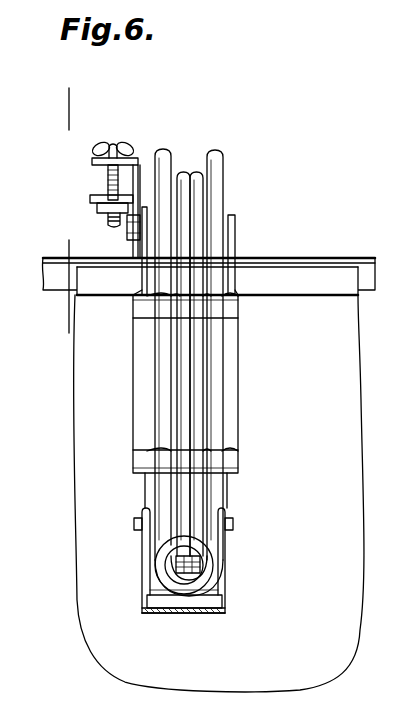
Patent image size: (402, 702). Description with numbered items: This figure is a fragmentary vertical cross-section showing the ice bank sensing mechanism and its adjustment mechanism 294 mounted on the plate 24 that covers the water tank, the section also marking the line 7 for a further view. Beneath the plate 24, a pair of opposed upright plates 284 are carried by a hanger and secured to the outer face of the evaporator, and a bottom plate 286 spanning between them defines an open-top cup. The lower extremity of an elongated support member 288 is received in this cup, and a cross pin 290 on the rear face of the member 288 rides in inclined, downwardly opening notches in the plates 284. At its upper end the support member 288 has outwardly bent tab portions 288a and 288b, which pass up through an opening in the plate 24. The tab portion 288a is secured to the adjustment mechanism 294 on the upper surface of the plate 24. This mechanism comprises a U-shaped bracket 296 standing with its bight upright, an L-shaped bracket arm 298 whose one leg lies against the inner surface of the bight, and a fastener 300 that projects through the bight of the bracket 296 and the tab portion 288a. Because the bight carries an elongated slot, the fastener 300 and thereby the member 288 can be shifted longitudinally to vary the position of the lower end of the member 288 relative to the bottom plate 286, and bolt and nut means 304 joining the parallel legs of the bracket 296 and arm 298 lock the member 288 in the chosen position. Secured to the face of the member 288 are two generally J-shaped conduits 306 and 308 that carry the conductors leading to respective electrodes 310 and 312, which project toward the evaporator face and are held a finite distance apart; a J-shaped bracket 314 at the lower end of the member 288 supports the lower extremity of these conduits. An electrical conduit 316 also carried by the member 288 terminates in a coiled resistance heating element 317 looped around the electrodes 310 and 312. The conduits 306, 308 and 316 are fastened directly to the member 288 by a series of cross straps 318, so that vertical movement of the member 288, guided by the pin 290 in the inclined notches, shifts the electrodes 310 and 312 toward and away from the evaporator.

The section line 7- 7 is at (64, 109).
The plate 24 is at (316, 258).
The upright plates 284 is at (142, 530).
The bottom plate 286 is at (163, 611).
The support member 288 is at (238, 418).
The outwardly bent tab portion 288a is at (147, 277).
The outwardly bent tab portion 288b is at (236, 226).
The cross pin 290 is at (230, 523).
The adjustment mechanism 294 is at (90, 157).
The U-shaped bracket 296 is at (142, 160).
The L-shaped bracket arm 298 is at (90, 200).
The fastener 300 is at (127, 236).
The bolt and nut means 304 is at (114, 144).
The conduit 306 is at (176, 378).
The conduit 308 is at (196, 376).
The electrode 310 is at (163, 577).
The electrode 312 is at (198, 563).
The J-shaped bracket 314 is at (220, 592).
The electrical conduit 316 is at (223, 180).
The coiled resistance heating element 317 is at (195, 610).
The cross straps 318 is at (238, 320).